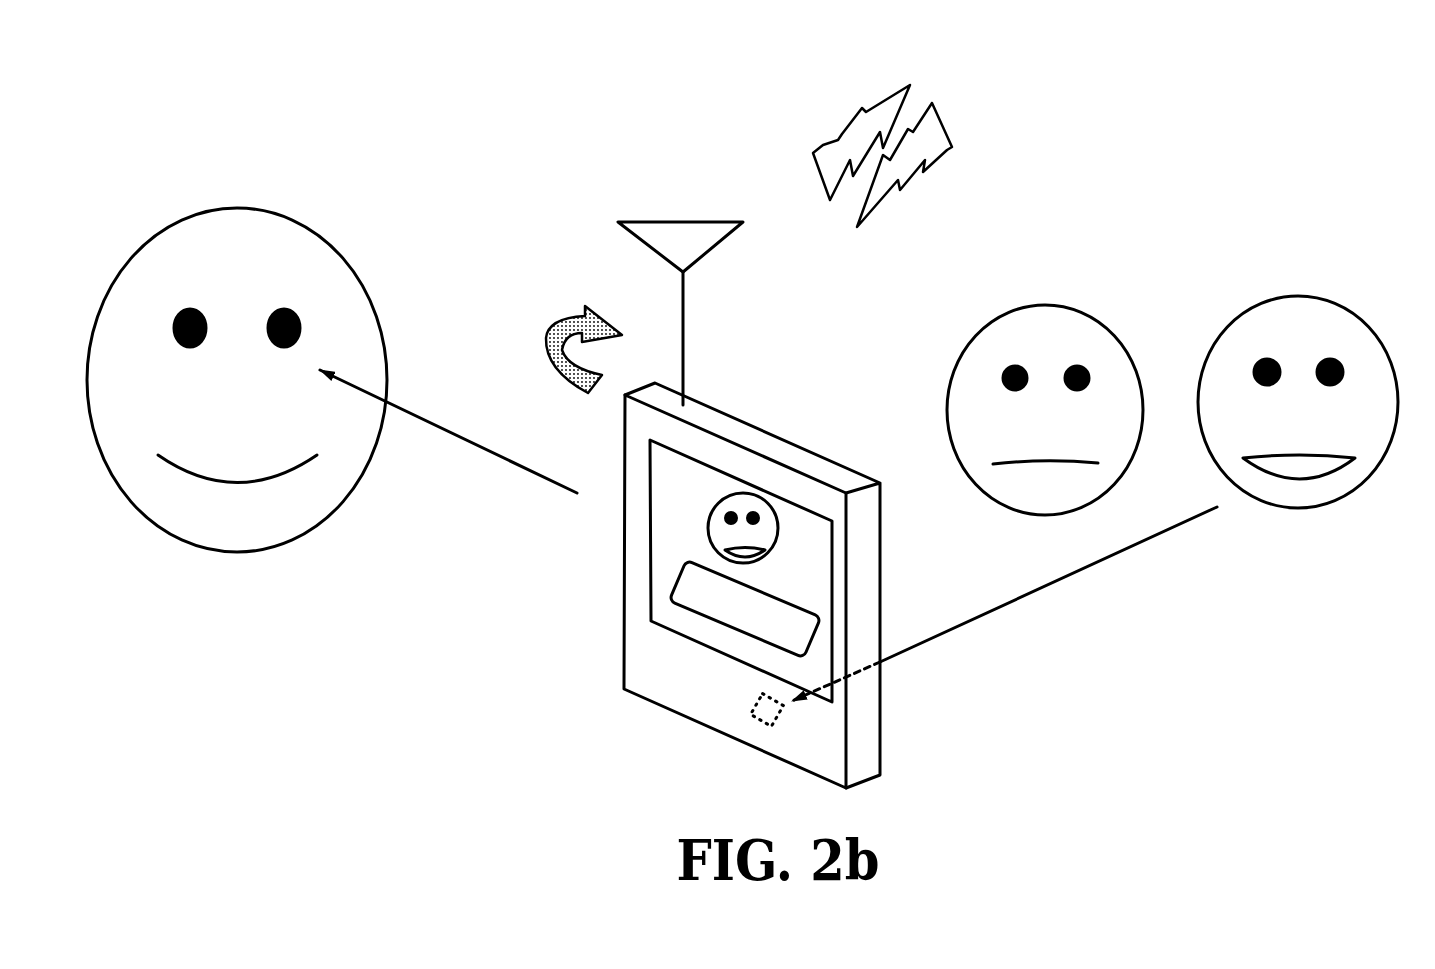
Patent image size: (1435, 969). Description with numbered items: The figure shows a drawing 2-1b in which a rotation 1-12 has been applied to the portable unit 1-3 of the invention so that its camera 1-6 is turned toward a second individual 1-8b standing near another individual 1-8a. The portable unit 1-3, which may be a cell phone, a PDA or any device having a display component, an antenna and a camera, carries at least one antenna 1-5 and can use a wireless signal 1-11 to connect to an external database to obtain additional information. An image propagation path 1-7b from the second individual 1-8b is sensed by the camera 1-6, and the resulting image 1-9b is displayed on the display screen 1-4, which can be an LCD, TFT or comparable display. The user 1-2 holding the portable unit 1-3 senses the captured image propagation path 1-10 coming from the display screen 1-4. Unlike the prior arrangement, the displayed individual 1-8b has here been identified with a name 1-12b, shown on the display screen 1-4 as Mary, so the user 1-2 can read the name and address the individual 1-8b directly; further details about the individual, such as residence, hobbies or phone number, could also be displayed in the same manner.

The drawing 2-1b is at (420, 153).
The user 1-2 is at (237, 557).
The captured image propagation path 1-10 is at (440, 425).
The rotation 1-12 is at (550, 310).
The antenna 1-5 is at (691, 320).
The wireless signal 1-11 is at (950, 152).
The individual 1-8a is at (1093, 317).
The second individual 1-8b is at (1290, 509).
The image propagation path 1-7b is at (1002, 598).
The portable unit 1-3 is at (887, 772).
The display screen 1-4 is at (670, 633).
The image 1-9b is at (708, 532).
The name 1-12b is at (672, 587).
The camera 1-6 is at (755, 716).